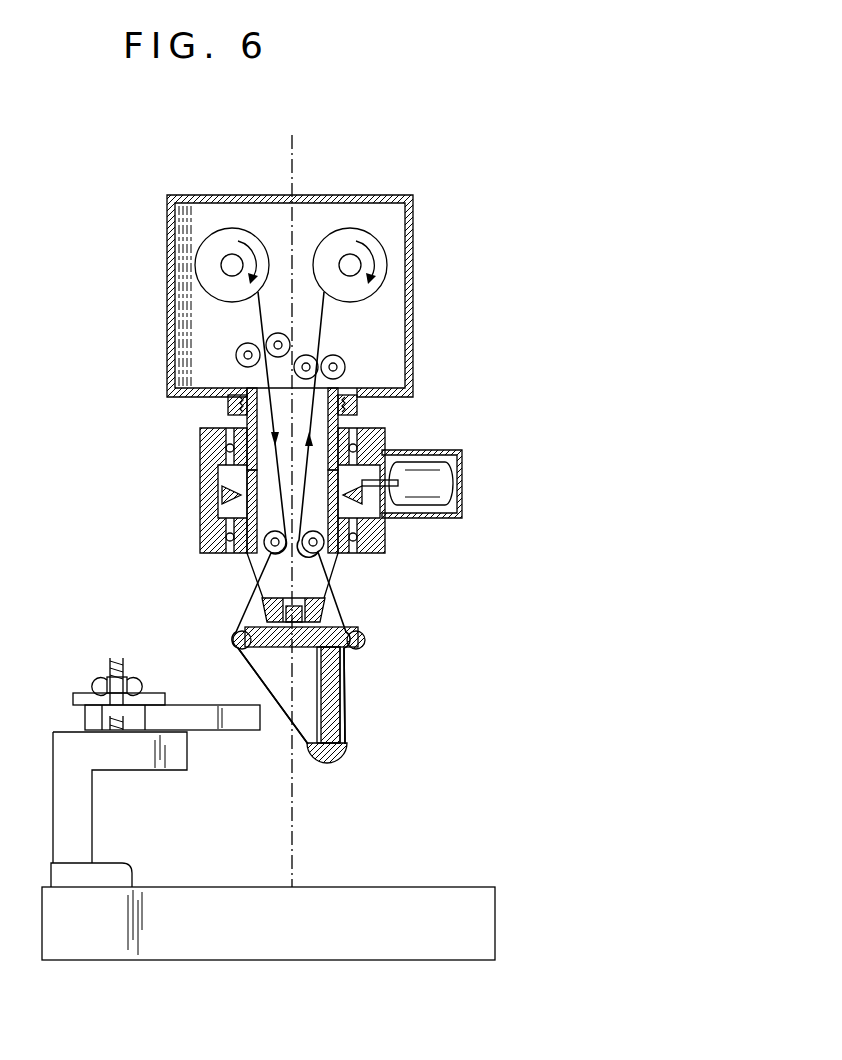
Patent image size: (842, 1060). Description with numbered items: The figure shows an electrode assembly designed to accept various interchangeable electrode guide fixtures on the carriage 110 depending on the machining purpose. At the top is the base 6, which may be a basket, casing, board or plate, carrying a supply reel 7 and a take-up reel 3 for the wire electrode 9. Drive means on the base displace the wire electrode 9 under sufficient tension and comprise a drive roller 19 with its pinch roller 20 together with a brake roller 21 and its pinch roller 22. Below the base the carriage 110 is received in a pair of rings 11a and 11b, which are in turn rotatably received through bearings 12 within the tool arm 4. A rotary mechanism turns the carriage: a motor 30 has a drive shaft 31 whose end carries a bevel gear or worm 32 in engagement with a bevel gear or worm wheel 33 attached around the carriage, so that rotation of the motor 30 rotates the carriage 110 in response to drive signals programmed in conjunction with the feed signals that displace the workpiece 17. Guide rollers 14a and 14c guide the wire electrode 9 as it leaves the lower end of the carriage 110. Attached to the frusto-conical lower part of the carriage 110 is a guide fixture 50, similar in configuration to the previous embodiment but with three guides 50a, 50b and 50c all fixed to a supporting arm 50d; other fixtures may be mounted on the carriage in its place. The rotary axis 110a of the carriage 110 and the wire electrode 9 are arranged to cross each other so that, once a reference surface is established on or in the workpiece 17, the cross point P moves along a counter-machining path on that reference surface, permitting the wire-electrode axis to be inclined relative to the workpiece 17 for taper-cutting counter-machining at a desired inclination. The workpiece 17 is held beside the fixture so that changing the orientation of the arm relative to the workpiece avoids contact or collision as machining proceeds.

The take-up reel 3 is at (356, 240).
The tool arm 4 is at (212, 515).
The base 6 is at (408, 228).
The supply reel 7 is at (218, 240).
The wire electrode 9 is at (330, 330).
The bearings 12 is at (226, 447).
The workpiece 17 is at (214, 732).
The drive roller 19 is at (345, 366).
The pinch roller 20 is at (304, 354).
The brake roller 21 is at (236, 352).
The pinch roller 22 is at (265, 342).
The motor 30 is at (463, 463).
The drive shaft 31 is at (387, 458).
The bevel gear or worm 32 is at (365, 497).
The bevel gear or worm wheel 33 is at (216, 488).
The electrode guide fixture 50 is at (372, 693).
The carriage 110 is at (235, 404).
The rotary axis 110a is at (300, 850).
The ring 11a is at (243, 424).
The ring 11b is at (242, 555).
The guide roller 14a is at (272, 552).
The guide roller 14c is at (317, 552).
The guide 50a is at (233, 637).
The guide 50b is at (340, 763).
The guide 50c is at (365, 640).
The supporting arm 50d is at (333, 715).
The cross point P is at (293, 727).